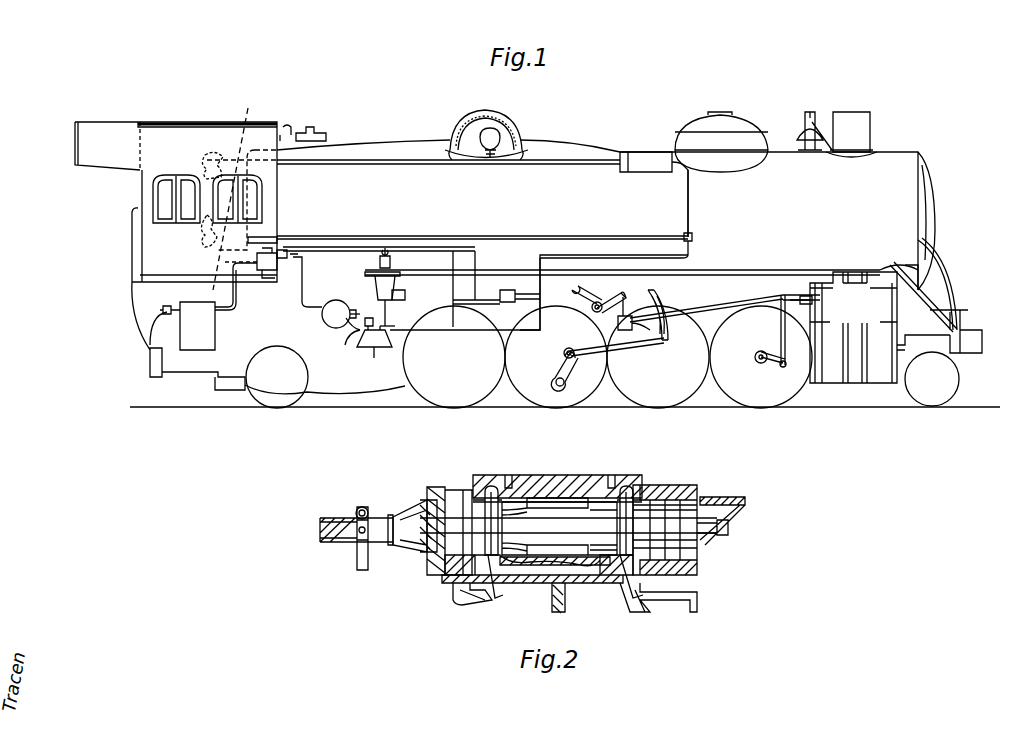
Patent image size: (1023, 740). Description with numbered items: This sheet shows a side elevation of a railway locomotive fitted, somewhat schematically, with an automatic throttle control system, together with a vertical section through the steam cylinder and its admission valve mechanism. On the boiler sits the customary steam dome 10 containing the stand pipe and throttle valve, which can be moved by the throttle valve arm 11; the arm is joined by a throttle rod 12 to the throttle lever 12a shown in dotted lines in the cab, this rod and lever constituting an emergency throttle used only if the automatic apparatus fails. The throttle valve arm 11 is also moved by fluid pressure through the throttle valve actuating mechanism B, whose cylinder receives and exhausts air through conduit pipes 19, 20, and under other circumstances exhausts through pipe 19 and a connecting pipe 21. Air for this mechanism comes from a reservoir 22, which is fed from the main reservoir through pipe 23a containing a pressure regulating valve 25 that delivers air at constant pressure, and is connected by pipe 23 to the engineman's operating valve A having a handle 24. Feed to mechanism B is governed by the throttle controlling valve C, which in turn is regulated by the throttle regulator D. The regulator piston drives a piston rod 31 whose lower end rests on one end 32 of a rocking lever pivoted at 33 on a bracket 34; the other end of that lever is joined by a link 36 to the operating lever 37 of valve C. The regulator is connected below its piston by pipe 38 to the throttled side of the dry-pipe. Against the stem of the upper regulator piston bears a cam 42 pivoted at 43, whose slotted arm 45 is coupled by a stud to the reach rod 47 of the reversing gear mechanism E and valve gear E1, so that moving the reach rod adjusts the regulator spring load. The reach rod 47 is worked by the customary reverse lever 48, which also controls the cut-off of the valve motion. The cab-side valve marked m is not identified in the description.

In FIG. 1, the steam dome 10 is at (505, 133).
In FIG. 1, the throttle valve arm 11 is at (498, 150).
In FIG. 1, the throttle rod 12 is at (415, 160).
In FIG. 1, the throttle lever 12a is at (237, 191).
In FIG. 1, the conduit pipe 19 is at (688, 195).
In FIG. 1, the conduit pipe 20 is at (672, 257).
In FIG. 1, the connecting pipe 21 is at (468, 229).
In FIG. 1, the reservoir 22 is at (215, 328).
In FIG. 1, the pipe 23 is at (238, 300).
In FIG. 1, the pipe 23a is at (170, 312).
In FIG. 1, the handle 24 is at (225, 265).
In FIG. 1, the pressure regulating valve 25 is at (168, 308).
In FIG. 1, the piston rod 31 is at (377, 312).
In FIG. 1, the end of rocking lever 32 is at (358, 332).
In FIG. 1, the pivot 33 is at (371, 325).
In FIG. 1, the bracket 34 is at (377, 349).
In FIG. 1, the link 36 is at (335, 340).
In FIG. 1, the operating lever 37 is at (333, 302).
In FIG. 1, the pipe 38 is at (394, 306).
In FIG. 1, the cam 42 is at (383, 250).
In FIG. 1, the pivot 43 is at (391, 262).
In FIG. 1, the arm 45 is at (388, 258).
In FIG. 1, the reach rod 47 is at (340, 252).
In FIG. 1, the reverse lever 48 is at (204, 238).
In FIG. 1, the engineman's operating valve A is at (262, 278).
In FIG. 1, the throttle valve actuating mechanism B is at (650, 172).
In FIG. 1, the throttle controlling valve C is at (343, 327).
In FIG. 1, the throttle regulator D is at (374, 284).
In FIG. 1, the reversing gear mechanism E is at (608, 338).
In FIG. 1, the valve gear E1 is at (712, 308).
In FIG. 2, the valve gear E1 is at (340, 512).
In FIG. 1, the valve m is at (286, 246).